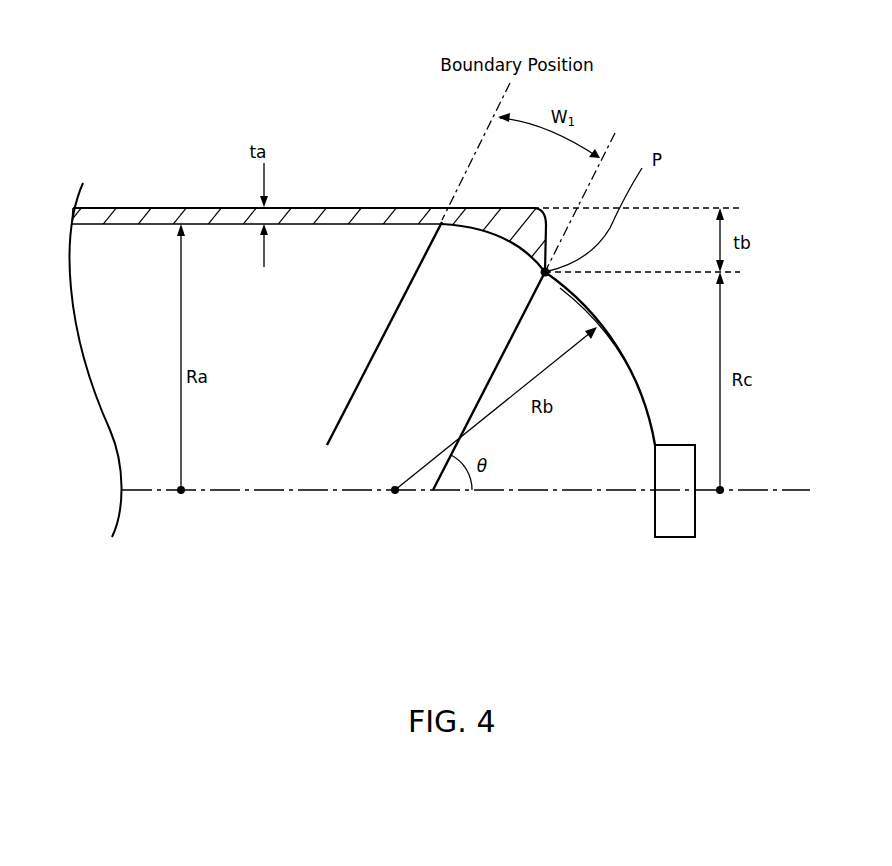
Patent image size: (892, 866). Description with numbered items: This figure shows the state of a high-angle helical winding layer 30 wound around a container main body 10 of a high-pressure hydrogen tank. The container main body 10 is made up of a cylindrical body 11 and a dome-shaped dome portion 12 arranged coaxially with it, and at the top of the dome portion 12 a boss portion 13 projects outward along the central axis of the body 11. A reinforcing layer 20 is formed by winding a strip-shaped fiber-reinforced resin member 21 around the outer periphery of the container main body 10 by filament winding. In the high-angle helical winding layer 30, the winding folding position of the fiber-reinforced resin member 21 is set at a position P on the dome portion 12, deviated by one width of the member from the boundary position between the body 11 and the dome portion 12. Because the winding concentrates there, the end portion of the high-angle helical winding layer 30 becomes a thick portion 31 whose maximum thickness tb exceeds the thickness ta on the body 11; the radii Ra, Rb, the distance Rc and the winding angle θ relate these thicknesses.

The container main body 10 is at (646, 389).
The body 11 is at (128, 207).
The dome portion 12 is at (617, 348).
The boss portion 13 is at (673, 538).
The reinforcing layer 20 is at (389, 200).
The fiber-reinforced resin member 21 is at (400, 367).
The high-angle helical winding layer 30 is at (200, 214).
The thick portion 31 is at (487, 216).